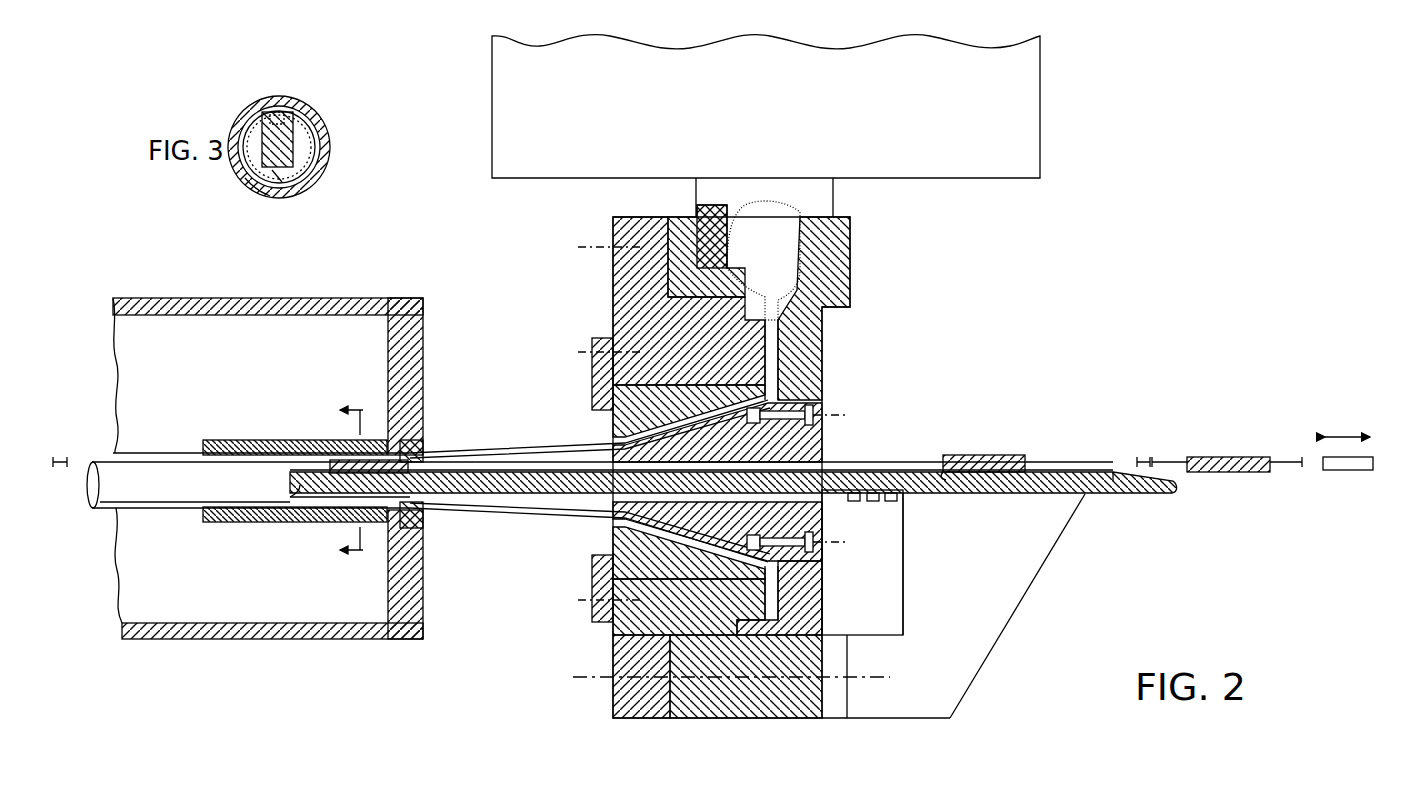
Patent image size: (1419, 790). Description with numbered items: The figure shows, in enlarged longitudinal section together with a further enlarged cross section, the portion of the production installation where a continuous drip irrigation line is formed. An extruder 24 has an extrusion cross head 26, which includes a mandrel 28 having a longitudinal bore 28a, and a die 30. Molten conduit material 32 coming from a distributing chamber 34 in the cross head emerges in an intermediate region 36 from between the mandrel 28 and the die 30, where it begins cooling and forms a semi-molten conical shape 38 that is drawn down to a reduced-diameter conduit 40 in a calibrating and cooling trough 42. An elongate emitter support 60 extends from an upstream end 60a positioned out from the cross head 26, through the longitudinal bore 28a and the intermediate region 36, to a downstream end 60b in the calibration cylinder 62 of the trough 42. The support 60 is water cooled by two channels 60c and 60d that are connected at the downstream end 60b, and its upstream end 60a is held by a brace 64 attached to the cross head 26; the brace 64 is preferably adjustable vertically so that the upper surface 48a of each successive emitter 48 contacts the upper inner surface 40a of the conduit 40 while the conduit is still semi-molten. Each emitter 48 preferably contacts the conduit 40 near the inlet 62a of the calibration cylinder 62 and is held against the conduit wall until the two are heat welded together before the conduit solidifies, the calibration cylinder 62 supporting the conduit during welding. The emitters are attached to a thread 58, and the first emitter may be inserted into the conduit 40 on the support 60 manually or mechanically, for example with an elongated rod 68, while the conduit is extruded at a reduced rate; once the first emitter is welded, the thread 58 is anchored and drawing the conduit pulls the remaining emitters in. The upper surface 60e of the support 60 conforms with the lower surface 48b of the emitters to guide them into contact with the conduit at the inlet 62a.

In FIG. 2, the extruder 24 is at (1068, 228).
In FIG. 2, the extrusion cross head 26 is at (830, 355).
In FIG. 2, the mandrel 28 is at (815, 440).
In FIG. 2, the longitudinal bore 28a is at (805, 545).
In FIG. 2, the die 30 is at (603, 384).
In FIG. 2, the molten conduit material 32 is at (800, 215).
In FIG. 2, the distributing chamber 34 is at (735, 212).
In FIG. 2, the intermediate region 36 is at (493, 318).
In FIG. 2, the semi-molten conical shape 38 is at (580, 452).
In FIG. 3, the conduit 40 is at (312, 108).
In FIG. 2, the conduit 40 is at (113, 455).
In FIG. 2, the upper inner surface of the conduit 40a is at (420, 507).
In FIG. 2, the calibrating and cooling trough 42 is at (283, 298).
In FIG. 3, the emitter 48 is at (278, 112).
In FIG. 2, the emitter 48 is at (418, 458).
In FIG. 2, the upper surface of the emitter 48a is at (1022, 455).
In FIG. 2, the lower surface of the emitter 48b is at (937, 470).
In FIG. 3, the thread 58 is at (290, 112).
In FIG. 2, the thread 58 is at (92, 462).
In FIG. 3, the emitter support 60 is at (304, 182).
In FIG. 2, the emitter support 60 is at (955, 495).
In FIG. 2, the upstream end of the support 60a is at (1108, 495).
In FIG. 2, the downstream end of the support 60b is at (300, 497).
In FIG. 3, the channel 60c is at (241, 187).
In FIG. 2, the channel 60c is at (858, 501).
In FIG. 3, the channel 60d is at (284, 182).
In FIG. 2, the channel 60d is at (905, 574).
In FIG. 2, the upper surface of the support 60e is at (1118, 470).
In FIG. 2, the calibration cylinder 62 is at (415, 525).
In FIG. 2, the inlet of the calibration cylinder 62a is at (425, 455).
In FIG. 2, the brace 64 is at (1000, 575).
In FIG. 2, the elongated rod 68 is at (1350, 472).